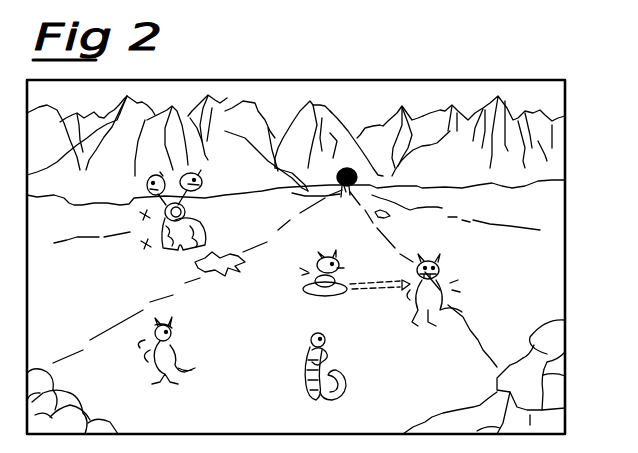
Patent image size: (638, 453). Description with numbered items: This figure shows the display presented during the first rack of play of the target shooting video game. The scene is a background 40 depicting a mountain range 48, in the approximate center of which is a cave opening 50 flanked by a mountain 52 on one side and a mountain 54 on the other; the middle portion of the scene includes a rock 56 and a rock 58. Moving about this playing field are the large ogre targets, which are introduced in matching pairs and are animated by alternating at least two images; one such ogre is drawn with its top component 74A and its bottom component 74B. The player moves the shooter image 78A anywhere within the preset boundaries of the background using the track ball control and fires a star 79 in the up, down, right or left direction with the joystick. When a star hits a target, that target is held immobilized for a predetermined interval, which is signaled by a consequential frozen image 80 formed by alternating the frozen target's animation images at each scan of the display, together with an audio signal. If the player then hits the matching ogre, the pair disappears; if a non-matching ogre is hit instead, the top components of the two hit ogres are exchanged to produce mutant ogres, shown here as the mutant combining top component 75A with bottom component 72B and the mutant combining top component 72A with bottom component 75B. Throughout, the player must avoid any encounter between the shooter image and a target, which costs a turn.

The background 40 is at (569, 257).
The mountain range 48 is at (342, 110).
The cave opening 50 is at (343, 196).
The mountain 52 is at (99, 186).
The mountain 54 is at (470, 175).
The rock 56 is at (226, 274).
The rock 58 is at (393, 215).
The ogre top component 72A is at (328, 338).
The ogre bottom component 72B is at (207, 234).
The ogre top component 74A is at (182, 333).
The ogre bottom component 74B is at (183, 376).
The ogre top component 75A is at (204, 176).
The ogre bottom component 75B is at (335, 396).
The shooter image 78A is at (348, 262).
The star 79 is at (402, 290).
The consequential frozen image 80 is at (128, 371).